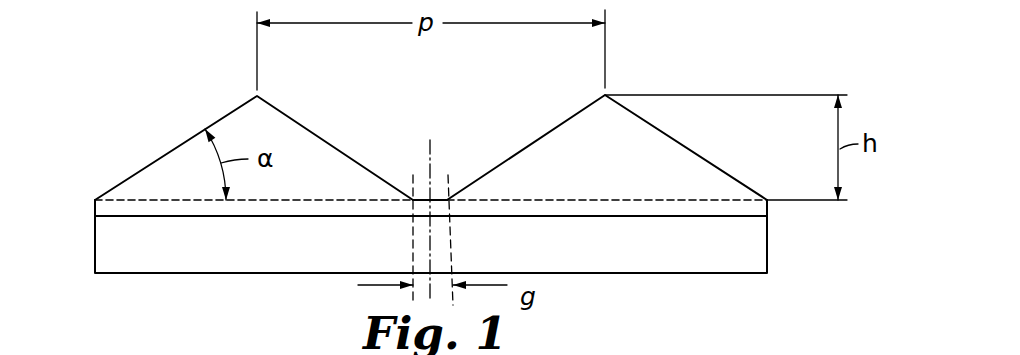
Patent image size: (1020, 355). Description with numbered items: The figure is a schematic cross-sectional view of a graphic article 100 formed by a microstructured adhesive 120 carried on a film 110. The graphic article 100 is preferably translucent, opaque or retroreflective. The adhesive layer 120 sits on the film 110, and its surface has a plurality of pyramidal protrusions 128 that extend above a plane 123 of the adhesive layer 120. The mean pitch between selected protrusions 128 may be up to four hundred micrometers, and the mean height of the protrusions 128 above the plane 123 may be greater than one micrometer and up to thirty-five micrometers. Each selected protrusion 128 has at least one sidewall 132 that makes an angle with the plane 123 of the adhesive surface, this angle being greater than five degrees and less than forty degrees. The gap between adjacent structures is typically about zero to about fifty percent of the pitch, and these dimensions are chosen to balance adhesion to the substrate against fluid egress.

The graphic article 100 is at (682, 50).
The film 110 is at (757, 251).
The microstructured adhesive 120 is at (252, 122).
The plane of the adhesive layer 123 is at (634, 200).
The pyramidal protrusion 128 is at (165, 140).
The sidewall 132 is at (128, 178).